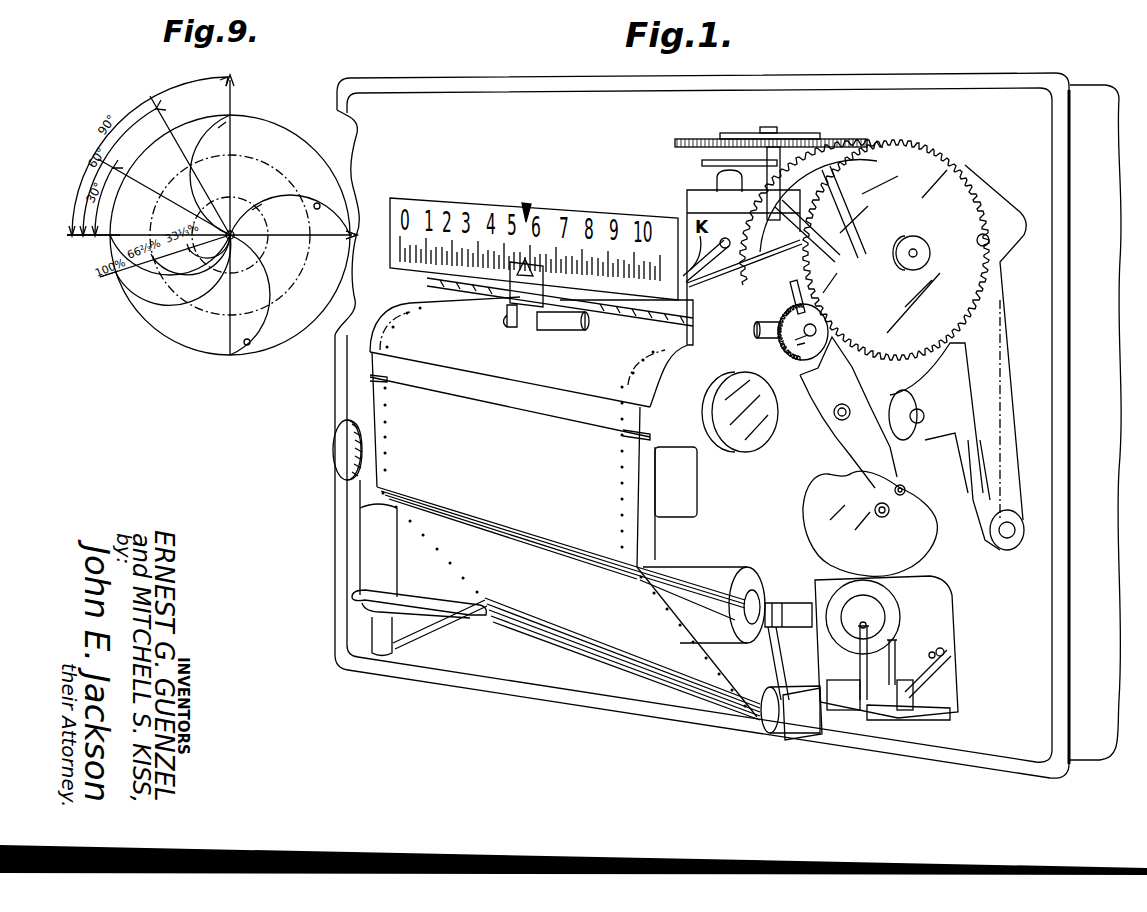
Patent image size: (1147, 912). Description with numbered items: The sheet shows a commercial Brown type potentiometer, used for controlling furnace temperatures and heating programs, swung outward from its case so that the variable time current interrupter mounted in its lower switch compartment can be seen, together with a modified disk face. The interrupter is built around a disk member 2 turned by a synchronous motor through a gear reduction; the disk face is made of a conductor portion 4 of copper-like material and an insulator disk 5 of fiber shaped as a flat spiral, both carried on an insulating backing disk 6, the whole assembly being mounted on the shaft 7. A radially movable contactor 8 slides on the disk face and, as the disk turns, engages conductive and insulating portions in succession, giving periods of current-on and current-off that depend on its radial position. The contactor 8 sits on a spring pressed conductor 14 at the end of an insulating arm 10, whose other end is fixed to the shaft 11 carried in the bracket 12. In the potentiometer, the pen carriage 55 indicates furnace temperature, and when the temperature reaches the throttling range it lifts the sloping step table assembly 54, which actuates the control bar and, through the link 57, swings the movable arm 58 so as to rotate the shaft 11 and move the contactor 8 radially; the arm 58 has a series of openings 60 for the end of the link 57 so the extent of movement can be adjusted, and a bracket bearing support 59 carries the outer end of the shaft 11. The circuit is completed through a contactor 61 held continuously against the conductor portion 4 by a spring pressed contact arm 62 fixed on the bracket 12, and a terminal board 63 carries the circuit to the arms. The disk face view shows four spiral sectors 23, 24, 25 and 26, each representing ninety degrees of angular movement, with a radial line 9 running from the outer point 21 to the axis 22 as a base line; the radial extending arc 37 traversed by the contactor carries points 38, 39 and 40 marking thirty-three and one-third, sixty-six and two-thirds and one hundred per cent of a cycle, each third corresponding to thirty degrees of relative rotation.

In FIG. 1, the disk member 2 is at (885, 590).
In FIG. 1, the conductor portion of the disk 4 is at (858, 598).
In FIG. 1, the insulator disk 5 is at (880, 615).
In FIG. 1, the backing disk 6 is at (838, 565).
In FIG. 1, the shaft 7 is at (815, 600).
In FIG. 1, the contactor 8 is at (823, 627).
In FIG. 9, the radial line 9 is at (233, 142).
In FIG. 1, the arm 10 is at (813, 710).
In FIG. 1, the shaft 11 is at (897, 720).
In FIG. 1, the bracket 12 is at (843, 727).
In FIG. 1, the spring pressed conductor 14 is at (820, 670).
In FIG. 9, the point 21 is at (354, 240).
In FIG. 9, the axis 22 is at (252, 210).
In FIG. 9, the spiral sector 23 is at (218, 128).
In FIG. 9, the spiral sector 24 is at (319, 203).
In FIG. 9, the spiral sector 25 is at (248, 345).
In FIG. 9, the spiral sector 26 is at (118, 240).
In FIG. 9, the radial extending arc 37 is at (118, 280).
In FIG. 9, the point 38 is at (196, 246).
In FIG. 9, the point 39 is at (161, 256).
In FIG. 9, the point 40 is at (135, 280).
In FIG. 1, the sloping step table assembly 54 is at (590, 318).
In FIG. 1, the pen carriage 55 is at (515, 312).
In FIG. 1, the link 57 is at (712, 272).
In FIG. 1, the movable arm 58 is at (958, 676).
In FIG. 1, the bracket bearing support 59 is at (917, 697).
In FIG. 1, the openings 60 is at (947, 652).
In FIG. 1, the contactor 61 is at (895, 640).
In FIG. 1, the spring pressed contact arm 62 is at (897, 655).
In FIG. 1, the terminal board 63 is at (843, 710).